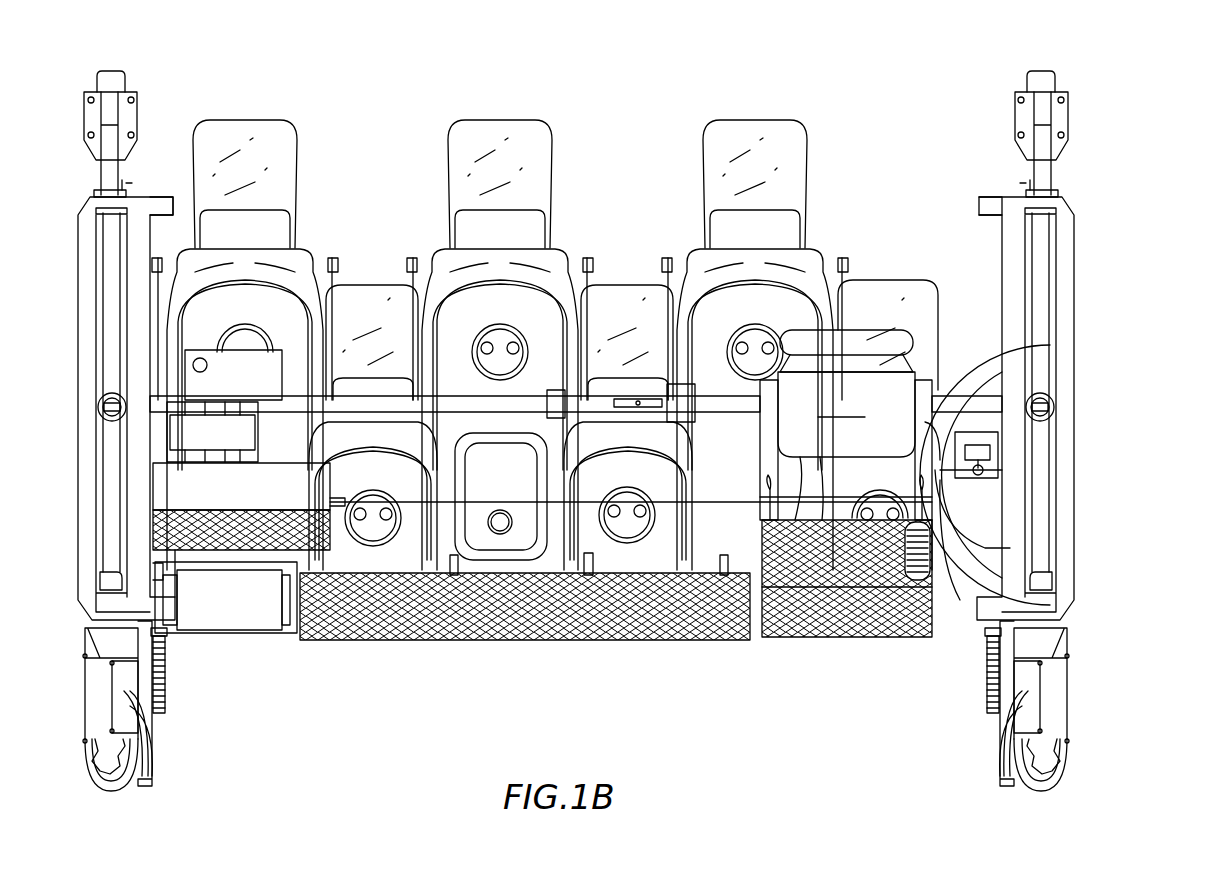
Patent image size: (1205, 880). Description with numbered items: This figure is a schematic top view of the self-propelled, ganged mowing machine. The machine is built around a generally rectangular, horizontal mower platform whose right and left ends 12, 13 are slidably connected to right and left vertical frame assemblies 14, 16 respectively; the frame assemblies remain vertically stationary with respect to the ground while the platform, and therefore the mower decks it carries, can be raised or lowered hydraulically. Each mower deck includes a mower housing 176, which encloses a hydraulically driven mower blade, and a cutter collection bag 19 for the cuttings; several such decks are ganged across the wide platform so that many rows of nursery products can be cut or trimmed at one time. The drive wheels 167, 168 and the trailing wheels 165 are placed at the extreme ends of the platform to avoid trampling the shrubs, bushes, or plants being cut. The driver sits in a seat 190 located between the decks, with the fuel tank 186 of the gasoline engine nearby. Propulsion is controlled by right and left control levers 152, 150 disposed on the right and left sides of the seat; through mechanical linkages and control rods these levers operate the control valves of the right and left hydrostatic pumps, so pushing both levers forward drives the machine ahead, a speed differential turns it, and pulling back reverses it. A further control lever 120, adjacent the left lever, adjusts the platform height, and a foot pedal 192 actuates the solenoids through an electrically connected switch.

The right end 12 is at (140, 197).
The left end 13 is at (1000, 195).
The right vertical frame assembly 14 is at (100, 275).
The left vertical frame assembly 16 is at (1048, 268).
The cutter collection bag 19 is at (258, 122).
The control lever 120 is at (985, 478).
The left control lever 150 is at (930, 540).
The right control lever 152 is at (792, 555).
The trailing wheels 165 is at (108, 70).
The drive wheel 167 is at (1040, 788).
The drive wheel 168 is at (110, 792).
The mower housing 176 is at (300, 250).
The fuel tank 186 is at (505, 547).
The seat 190 is at (846, 425).
The foot pedal 192 is at (928, 585).